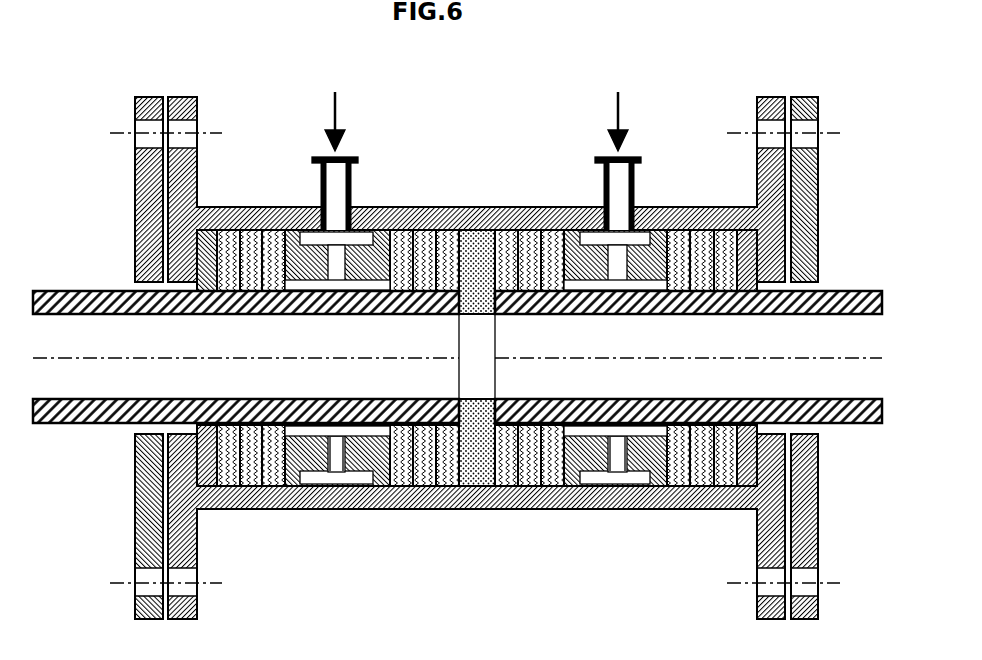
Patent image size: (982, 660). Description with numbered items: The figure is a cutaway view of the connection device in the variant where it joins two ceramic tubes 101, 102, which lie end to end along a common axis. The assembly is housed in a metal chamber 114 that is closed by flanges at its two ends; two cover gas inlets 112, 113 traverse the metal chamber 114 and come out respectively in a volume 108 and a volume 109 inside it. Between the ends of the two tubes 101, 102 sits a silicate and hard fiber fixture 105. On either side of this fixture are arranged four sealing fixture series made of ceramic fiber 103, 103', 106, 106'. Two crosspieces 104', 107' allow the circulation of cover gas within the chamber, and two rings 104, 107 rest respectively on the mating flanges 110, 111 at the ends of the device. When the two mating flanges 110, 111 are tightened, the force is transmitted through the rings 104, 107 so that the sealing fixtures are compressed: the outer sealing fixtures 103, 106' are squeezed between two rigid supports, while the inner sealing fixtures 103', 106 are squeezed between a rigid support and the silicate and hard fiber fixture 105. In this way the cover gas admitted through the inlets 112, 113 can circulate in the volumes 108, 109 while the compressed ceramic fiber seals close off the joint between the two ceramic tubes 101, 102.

The ceramic tube 101 is at (135, 373).
The ceramic tube 102 is at (847, 372).
The sealing fixture series made of ceramic fiber 103 is at (257, 401).
The sealing fixture series made of ceramic fiber 103' is at (424, 401).
The ring 104 is at (223, 401).
The crosspiece allowing the circulation of cover gas 104' is at (341, 401).
The silicate and hard fiber fixture 105 is at (477, 460).
The sealing fixture series made of ceramic fiber 106 is at (522, 426).
The sealing fixture series made of ceramic fiber 106' is at (682, 426).
The ring 107 is at (720, 426).
The crosspiece allowing the circulation of cover gas 107' is at (615, 426).
The volume 108 is at (338, 458).
The volume 109 is at (618, 465).
The mating flange 110 is at (148, 197).
The mating flange 111 is at (802, 217).
The cover gas inlet 112 is at (333, 184).
The cover gas inlet 113 is at (472, 230).
The metal chamber 114 is at (613, 182).